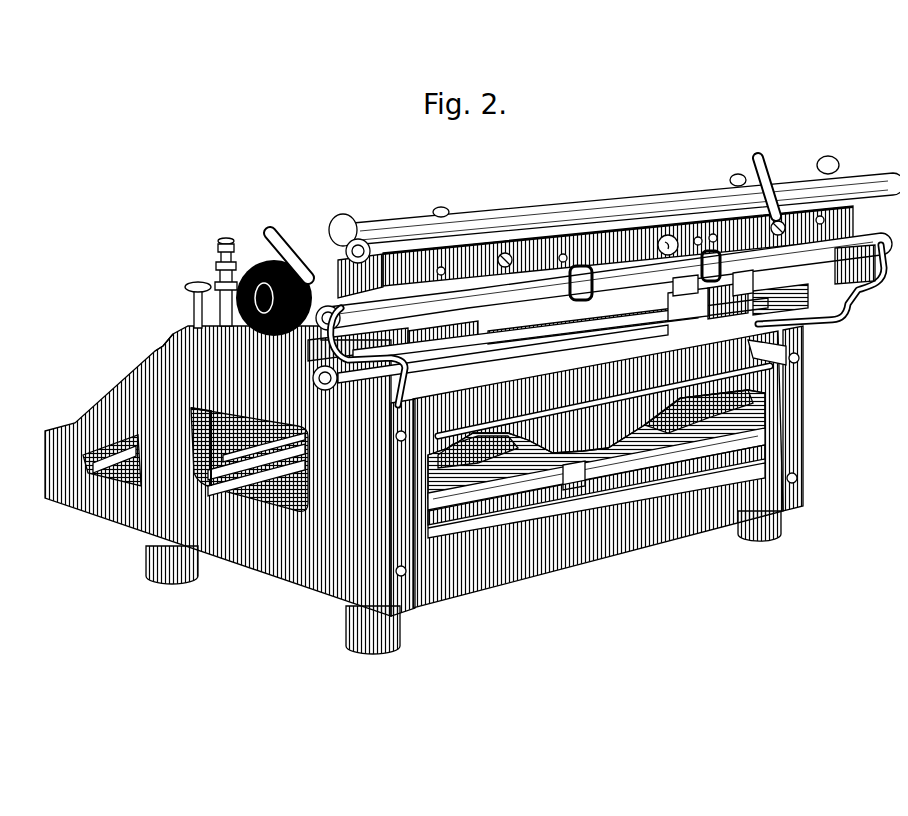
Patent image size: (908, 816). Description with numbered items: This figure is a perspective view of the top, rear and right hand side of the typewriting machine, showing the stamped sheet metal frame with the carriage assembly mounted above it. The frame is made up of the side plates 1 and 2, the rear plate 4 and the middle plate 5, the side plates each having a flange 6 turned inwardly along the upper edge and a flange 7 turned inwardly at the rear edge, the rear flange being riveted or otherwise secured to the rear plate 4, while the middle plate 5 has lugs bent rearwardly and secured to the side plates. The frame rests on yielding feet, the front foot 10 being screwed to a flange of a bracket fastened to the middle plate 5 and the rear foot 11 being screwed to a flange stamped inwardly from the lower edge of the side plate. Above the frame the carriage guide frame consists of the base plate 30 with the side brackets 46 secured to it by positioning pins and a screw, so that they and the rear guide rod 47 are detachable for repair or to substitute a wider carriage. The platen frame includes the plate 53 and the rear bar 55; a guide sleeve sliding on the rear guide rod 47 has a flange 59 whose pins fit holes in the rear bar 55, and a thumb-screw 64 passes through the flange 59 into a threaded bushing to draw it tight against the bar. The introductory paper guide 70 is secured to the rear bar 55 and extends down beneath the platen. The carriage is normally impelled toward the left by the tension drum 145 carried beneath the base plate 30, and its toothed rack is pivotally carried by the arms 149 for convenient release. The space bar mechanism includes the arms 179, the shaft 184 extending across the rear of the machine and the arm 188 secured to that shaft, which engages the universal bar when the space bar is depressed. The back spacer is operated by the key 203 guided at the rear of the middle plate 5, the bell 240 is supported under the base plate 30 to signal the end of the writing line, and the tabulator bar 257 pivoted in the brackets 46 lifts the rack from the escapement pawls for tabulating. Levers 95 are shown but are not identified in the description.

The side plate 1 is at (750, 437).
The side plate 2 is at (267, 557).
The rear plate 4 is at (587, 537).
The middle plate 5 is at (220, 420).
The flange 6 is at (153, 340).
The flange 7 is at (400, 592).
The front foot 10 is at (160, 555).
The rear foot 11 is at (360, 630).
The base plate 30 is at (745, 332).
The side bracket 46 is at (833, 293).
The rear guide rod 47 is at (845, 255).
The plate 53 is at (372, 242).
The rear bar 55 is at (466, 245).
The flange 59 is at (685, 210).
The thumb-screw 64 is at (660, 228).
The introductory paper guide 70 is at (550, 212).
The lever 95 is at (268, 190).
The tension drum 145 is at (728, 397).
The arm 149 is at (335, 207).
The arm 179 is at (128, 432).
The shaft 184 is at (640, 452).
The arm 188 is at (585, 468).
The key 203 is at (187, 275).
The bell 240 is at (493, 473).
The bar 257 is at (787, 297).